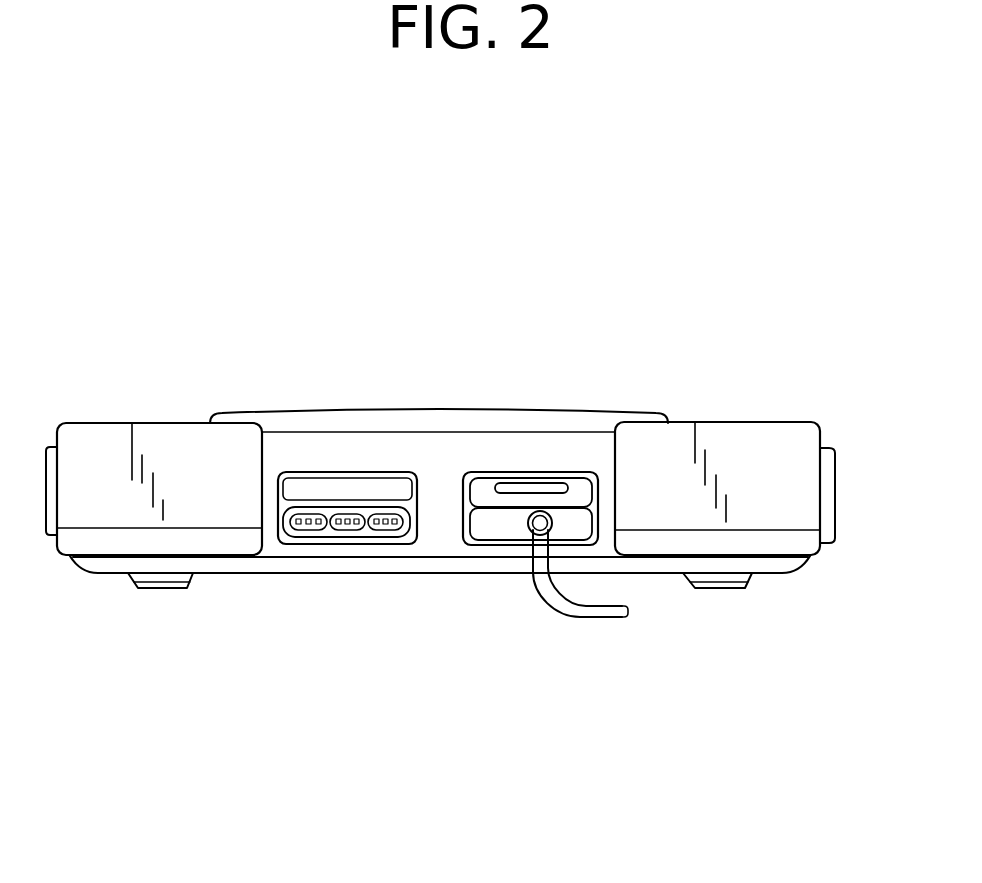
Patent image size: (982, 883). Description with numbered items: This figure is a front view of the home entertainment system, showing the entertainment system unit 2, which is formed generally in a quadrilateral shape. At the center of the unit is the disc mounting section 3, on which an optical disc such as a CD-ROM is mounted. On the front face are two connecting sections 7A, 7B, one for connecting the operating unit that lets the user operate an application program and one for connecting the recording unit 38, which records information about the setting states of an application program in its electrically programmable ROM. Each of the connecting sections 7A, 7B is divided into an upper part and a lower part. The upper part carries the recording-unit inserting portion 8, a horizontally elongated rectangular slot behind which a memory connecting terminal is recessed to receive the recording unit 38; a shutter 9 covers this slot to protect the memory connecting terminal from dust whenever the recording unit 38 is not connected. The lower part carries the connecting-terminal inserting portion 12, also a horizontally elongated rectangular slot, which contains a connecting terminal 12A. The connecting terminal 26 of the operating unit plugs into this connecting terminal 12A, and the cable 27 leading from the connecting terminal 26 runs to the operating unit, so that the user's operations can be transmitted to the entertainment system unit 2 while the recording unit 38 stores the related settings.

The entertainment system unit 2 is at (613, 297).
The disc mounting section 3 is at (353, 410).
The connecting section 7A is at (305, 547).
The connecting section 7B is at (472, 547).
The recording-unit inserting portion 8 is at (295, 470).
The shutter 9 is at (390, 490).
The connecting-terminal inserting portion 12 is at (344, 534).
The connecting terminal 12A is at (283, 536).
The connecting terminal 26 is at (520, 542).
The cable 27 is at (613, 620).
The recording unit 38 is at (578, 488).